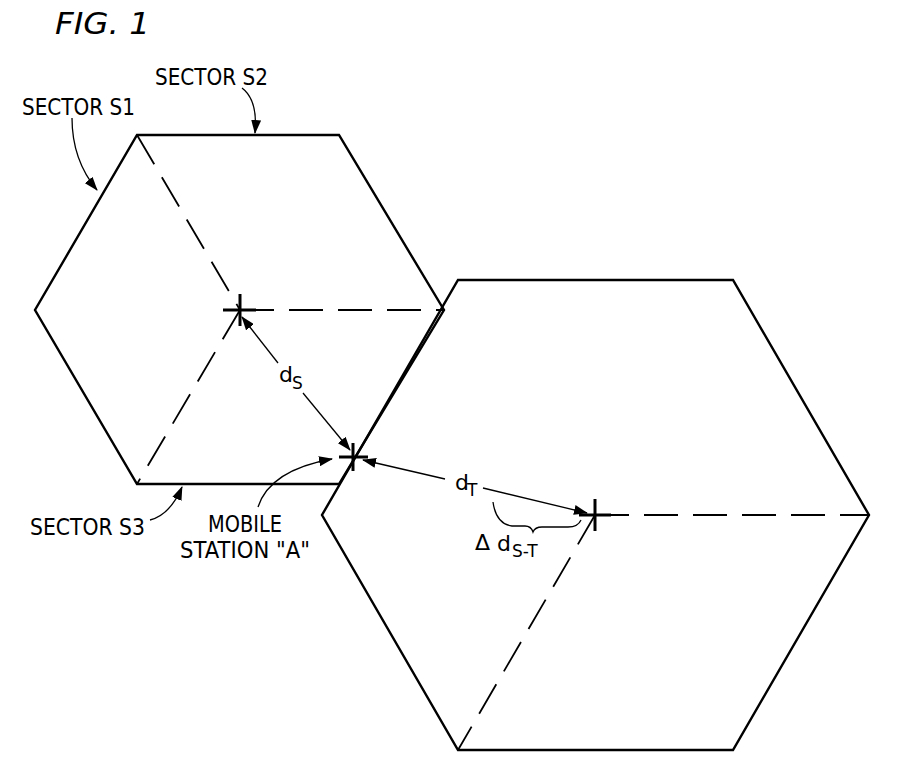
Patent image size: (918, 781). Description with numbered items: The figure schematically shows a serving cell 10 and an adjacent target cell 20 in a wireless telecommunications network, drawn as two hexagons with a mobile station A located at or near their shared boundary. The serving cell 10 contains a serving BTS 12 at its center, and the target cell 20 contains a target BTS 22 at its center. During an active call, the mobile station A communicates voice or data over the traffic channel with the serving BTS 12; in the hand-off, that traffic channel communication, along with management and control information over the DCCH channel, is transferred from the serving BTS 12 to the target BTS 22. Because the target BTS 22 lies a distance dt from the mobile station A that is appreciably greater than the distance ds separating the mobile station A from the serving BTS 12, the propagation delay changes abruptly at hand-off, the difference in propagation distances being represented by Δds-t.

The serving cell 10 is at (312, 132).
The serving BTS 12 is at (230, 301).
The target cell 20 is at (597, 276).
The target BTS 22 is at (606, 500).